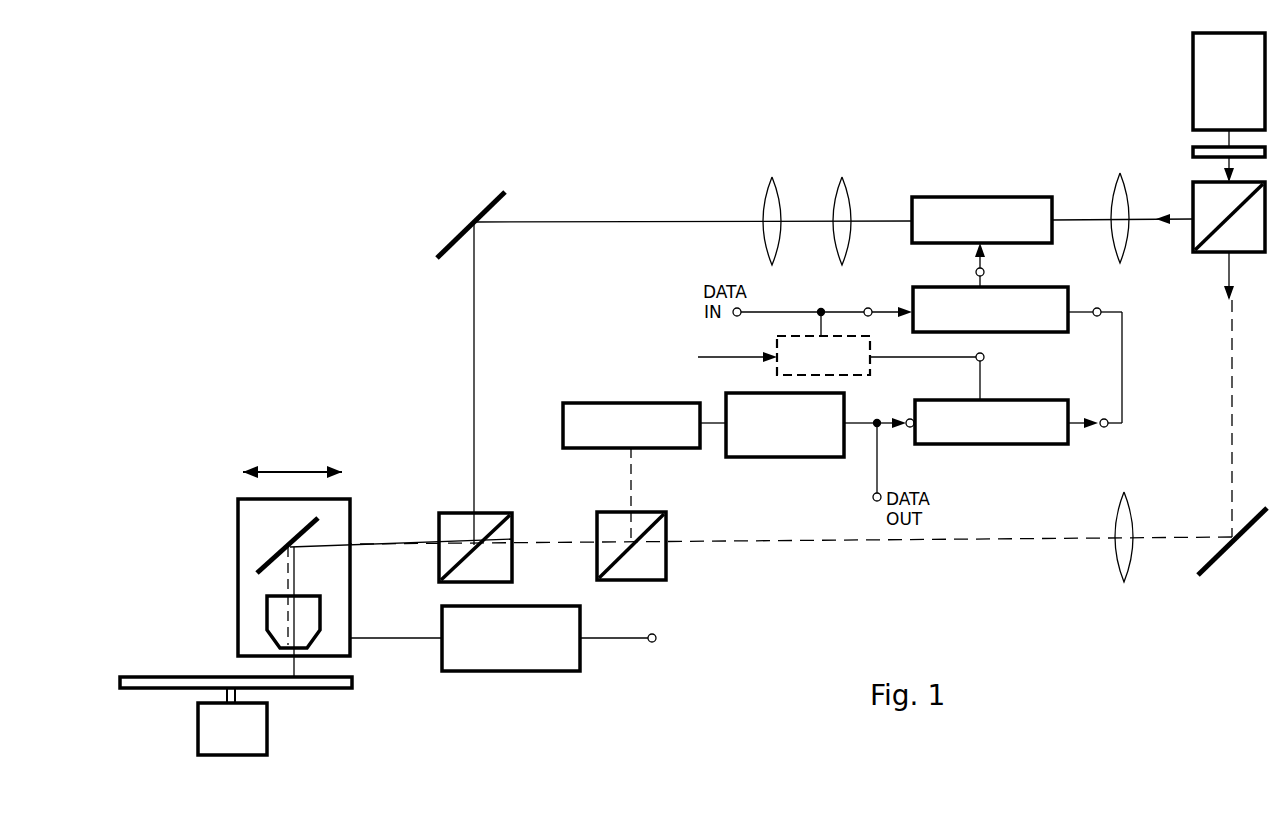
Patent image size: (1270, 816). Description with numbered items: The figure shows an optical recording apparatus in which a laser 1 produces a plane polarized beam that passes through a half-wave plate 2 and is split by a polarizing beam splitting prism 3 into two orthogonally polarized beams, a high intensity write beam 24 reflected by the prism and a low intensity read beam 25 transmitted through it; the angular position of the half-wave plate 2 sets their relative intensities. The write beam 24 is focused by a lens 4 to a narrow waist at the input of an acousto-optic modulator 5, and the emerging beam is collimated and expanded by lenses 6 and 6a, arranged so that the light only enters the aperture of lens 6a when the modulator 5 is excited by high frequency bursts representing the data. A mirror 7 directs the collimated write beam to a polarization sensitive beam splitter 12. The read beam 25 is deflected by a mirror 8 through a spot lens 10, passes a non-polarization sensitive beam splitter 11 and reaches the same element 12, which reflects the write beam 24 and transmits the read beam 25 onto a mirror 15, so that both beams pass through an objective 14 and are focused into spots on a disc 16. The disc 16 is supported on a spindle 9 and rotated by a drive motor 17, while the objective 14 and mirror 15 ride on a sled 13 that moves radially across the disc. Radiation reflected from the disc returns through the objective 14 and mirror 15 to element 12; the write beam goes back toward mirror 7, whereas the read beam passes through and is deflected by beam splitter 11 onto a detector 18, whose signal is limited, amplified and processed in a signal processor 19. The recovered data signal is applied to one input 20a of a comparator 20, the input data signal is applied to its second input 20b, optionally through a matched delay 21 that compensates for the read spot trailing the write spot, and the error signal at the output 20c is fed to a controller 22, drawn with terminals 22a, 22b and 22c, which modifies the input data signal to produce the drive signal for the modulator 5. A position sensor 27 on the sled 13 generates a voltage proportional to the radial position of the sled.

The laser 1 is at (1200, 93).
The half-wave plate 2 is at (1205, 148).
The polarizing beam splitting prism 3 is at (1205, 230).
The lens 4 is at (1117, 185).
The acousto-optic modulator 5 is at (965, 195).
The lens 6 is at (778, 190).
The lens 6a is at (846, 190).
The mirror 7 is at (485, 205).
The mirror 8 is at (1222, 556).
The spindle 9 is at (240, 697).
The spot lens 10 is at (1128, 515).
The non-polarization sensitive beam splitter 11 is at (640, 512).
The polarization sensitive beam splitter 12 is at (505, 516).
The sled 13 is at (343, 505).
The objective 14 is at (303, 605).
The mirror 15 is at (296, 532).
The disc 16 is at (150, 677).
The drive motor 17 is at (203, 727).
The detector 18 is at (680, 402).
The signal processor 19 is at (846, 398).
The comparator 20 is at (1045, 400).
The input of the comparator 20a is at (909, 428).
The second input of the comparator 20b is at (984, 357).
The output of the comparator 20c is at (1107, 428).
The matched delay 21 is at (870, 355).
The controller 22 is at (1055, 287).
The controller input terminal 22a is at (1100, 308).
The controller data input terminal 22b is at (868, 307).
The controller output terminal 22c is at (984, 272).
The write beam 24 is at (1152, 211).
The read beam 25 is at (1230, 358).
The position sensor 27 is at (518, 666).